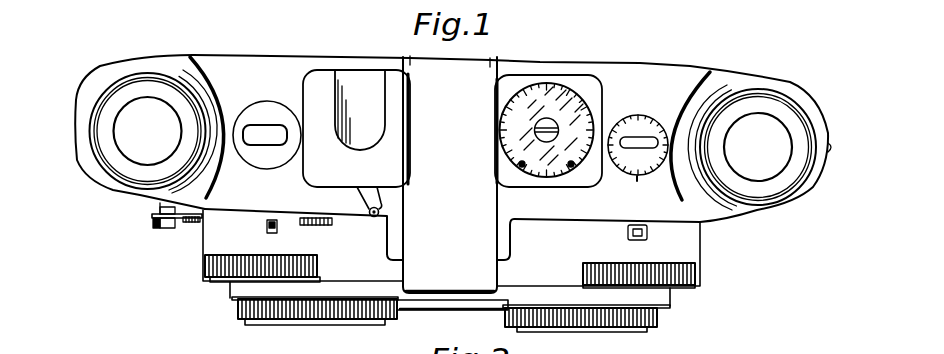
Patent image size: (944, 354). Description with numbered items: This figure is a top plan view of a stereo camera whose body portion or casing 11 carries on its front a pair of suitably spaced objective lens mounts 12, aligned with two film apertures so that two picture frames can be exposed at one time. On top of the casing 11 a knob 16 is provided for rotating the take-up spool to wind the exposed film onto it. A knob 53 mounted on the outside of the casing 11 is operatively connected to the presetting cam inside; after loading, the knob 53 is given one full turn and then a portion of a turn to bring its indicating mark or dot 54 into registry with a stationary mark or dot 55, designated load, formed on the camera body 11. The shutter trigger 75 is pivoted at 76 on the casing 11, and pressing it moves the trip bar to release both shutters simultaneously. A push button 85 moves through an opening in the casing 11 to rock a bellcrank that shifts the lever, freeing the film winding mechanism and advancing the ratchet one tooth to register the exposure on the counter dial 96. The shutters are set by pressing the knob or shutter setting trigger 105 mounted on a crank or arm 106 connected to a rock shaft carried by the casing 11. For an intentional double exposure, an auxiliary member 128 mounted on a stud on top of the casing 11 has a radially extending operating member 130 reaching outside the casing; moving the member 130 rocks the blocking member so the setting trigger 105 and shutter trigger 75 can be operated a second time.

The body portion or casing 11 is at (453, 174).
The objective lens mounts 12 is at (295, 325).
The knob 16 is at (148, 158).
The knob 53 is at (255, 155).
The indicating mark or dot 54 is at (297, 137).
The stationary mark or dot 55 is at (273, 170).
The shutter trigger 75 is at (156, 232).
The pivot 76 is at (185, 223).
The push button 85 is at (630, 237).
The counter dial 96 is at (640, 116).
The knob or shutter setting trigger 105 is at (271, 233).
The crank or arm 106 is at (326, 225).
The auxiliary member 128 is at (372, 188).
The operating member 130 is at (381, 212).